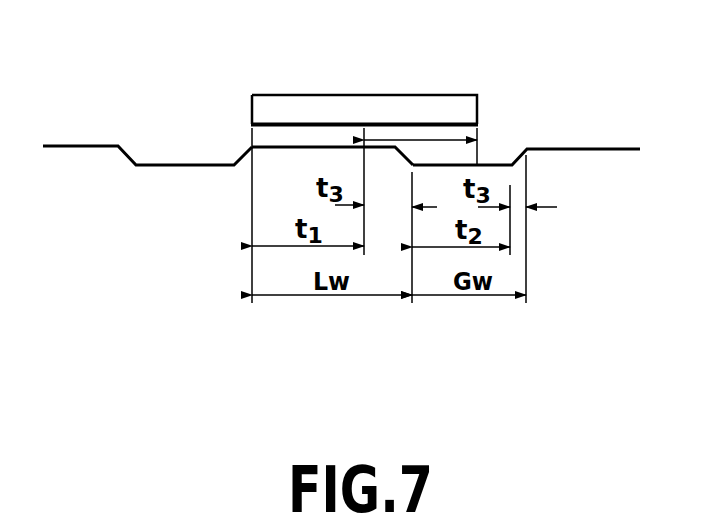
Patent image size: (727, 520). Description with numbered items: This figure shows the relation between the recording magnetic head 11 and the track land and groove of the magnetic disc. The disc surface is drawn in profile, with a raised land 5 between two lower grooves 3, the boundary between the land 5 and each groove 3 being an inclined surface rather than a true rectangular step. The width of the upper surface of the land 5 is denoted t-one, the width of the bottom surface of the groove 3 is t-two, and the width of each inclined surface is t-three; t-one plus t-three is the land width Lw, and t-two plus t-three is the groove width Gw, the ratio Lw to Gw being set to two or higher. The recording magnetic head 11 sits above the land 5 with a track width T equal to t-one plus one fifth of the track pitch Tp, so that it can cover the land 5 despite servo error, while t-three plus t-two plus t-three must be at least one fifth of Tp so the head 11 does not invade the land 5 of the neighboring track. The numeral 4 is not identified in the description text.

The groove 3 is at (170, 165).
The recording track land 4 is at (325, 147).
The land 5 is at (395, 123).
The recording magnetic head 11 is at (468, 112).